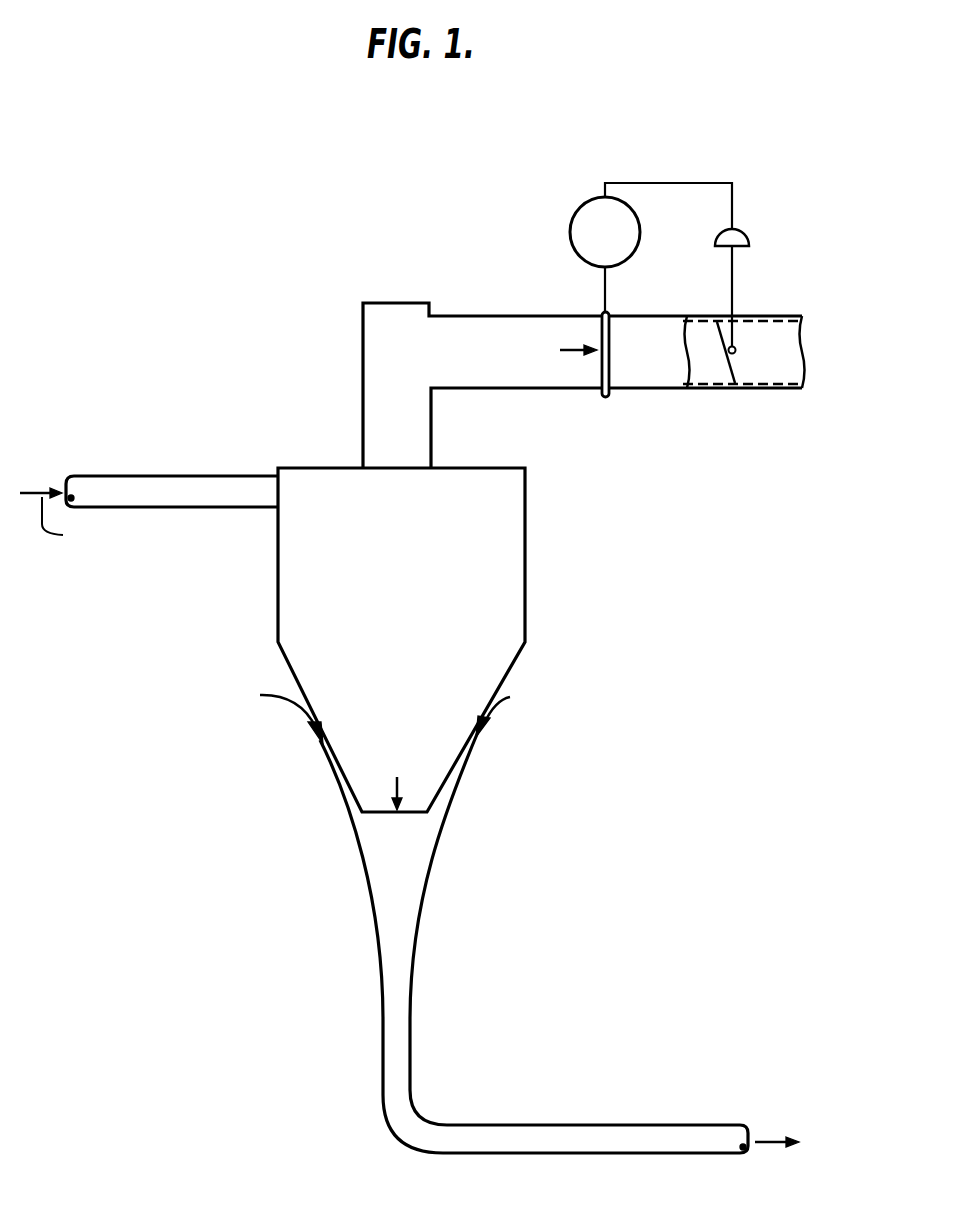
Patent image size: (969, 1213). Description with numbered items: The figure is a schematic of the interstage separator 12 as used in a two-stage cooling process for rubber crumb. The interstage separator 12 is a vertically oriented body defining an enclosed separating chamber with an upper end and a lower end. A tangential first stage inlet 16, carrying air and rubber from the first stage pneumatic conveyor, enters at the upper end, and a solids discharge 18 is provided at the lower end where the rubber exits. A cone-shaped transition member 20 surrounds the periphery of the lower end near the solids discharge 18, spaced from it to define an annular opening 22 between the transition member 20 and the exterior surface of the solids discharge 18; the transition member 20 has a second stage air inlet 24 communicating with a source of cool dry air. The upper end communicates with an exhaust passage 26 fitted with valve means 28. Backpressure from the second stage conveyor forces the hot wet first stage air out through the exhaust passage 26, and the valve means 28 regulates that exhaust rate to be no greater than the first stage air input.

The interstage separator 12 is at (510, 605).
The tangential first stage inlet 16 is at (230, 492).
The solids discharge 18 is at (420, 803).
The cone-shaped transition member 20 is at (350, 802).
The annular opening 22 is at (493, 728).
The second stage air inlet 24 is at (307, 727).
The exhaust passage 26 is at (373, 405).
The valve means 28 is at (724, 388).